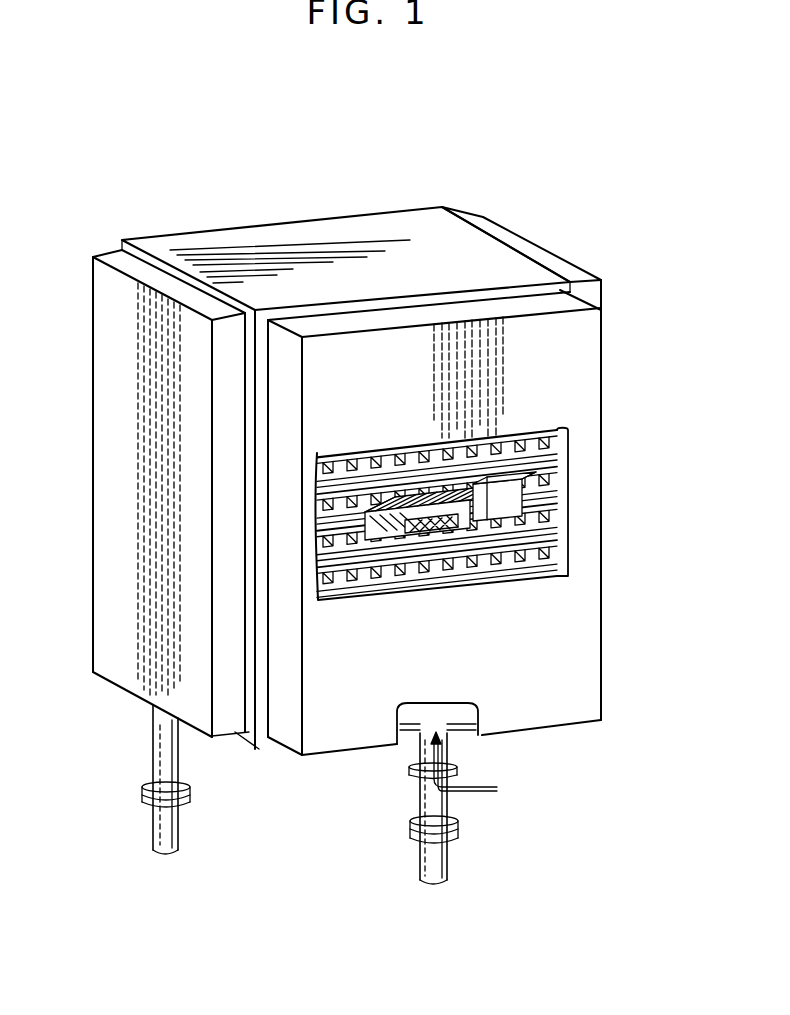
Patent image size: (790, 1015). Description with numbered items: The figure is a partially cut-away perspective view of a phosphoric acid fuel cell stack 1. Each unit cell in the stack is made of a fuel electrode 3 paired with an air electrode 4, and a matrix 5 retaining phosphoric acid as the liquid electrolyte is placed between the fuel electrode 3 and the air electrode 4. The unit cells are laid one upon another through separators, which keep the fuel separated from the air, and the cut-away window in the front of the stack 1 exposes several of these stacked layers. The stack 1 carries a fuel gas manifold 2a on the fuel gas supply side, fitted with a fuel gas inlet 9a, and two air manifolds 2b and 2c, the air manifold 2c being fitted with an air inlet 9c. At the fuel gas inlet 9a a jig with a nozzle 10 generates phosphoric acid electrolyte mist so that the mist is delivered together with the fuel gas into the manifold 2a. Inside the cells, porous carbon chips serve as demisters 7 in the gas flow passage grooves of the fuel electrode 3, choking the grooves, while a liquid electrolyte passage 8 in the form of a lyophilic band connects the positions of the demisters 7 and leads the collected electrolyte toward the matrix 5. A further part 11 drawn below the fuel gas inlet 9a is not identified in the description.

The stack 1 is at (247, 225).
The fuel gas manifold 2a is at (582, 727).
The air manifold 2b is at (523, 238).
The air manifold 2c is at (96, 257).
The fuel electrode 3 is at (477, 527).
The air electrode 4 is at (553, 472).
The matrix 5 is at (553, 462).
The demisters 7 is at (410, 500).
The liquid electrolyte passage 8 is at (420, 522).
The fuel gas inlet 9a is at (417, 746).
The air inlet 9c is at (153, 742).
The nozzle 10 is at (443, 748).
The lower flange 11 is at (448, 807).